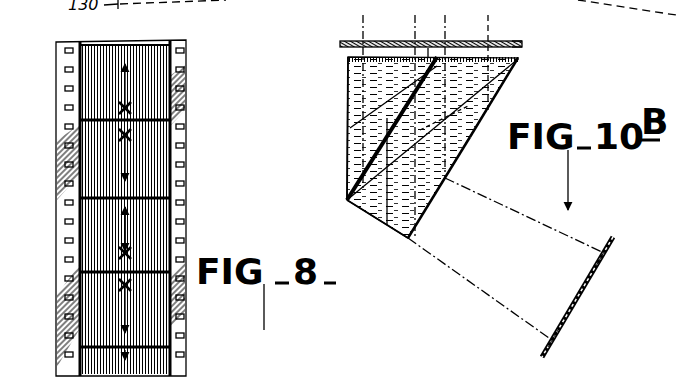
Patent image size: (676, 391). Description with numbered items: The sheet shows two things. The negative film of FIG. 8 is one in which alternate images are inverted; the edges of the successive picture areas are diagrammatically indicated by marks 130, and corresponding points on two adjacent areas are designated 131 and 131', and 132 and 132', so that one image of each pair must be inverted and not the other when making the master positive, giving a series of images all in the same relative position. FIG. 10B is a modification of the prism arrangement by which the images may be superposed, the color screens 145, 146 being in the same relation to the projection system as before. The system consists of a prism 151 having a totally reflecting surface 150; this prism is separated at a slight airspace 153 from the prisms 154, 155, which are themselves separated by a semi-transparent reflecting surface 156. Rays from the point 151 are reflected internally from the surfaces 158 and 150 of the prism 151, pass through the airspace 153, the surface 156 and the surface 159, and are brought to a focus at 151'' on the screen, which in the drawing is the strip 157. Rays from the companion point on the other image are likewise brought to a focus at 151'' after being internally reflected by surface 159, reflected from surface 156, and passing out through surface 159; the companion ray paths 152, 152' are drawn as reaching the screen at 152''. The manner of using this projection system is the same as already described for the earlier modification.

In FIG. 8, the marks 130 is at (79, 126).
In FIG. 8, the corresponding point 131 is at (177, 82).
In FIG. 8, the corresponding point 132 is at (179, 142).
In FIG. 8, the corresponding point 132' is at (178, 132).
In FIG. 8, the corresponding point 131' is at (177, 269).
In FIG. 10B, the color screen 145 is at (343, 43).
In FIG. 10B, the color screen 146 is at (522, 45).
In FIG. 10B, the totally reflecting surface 150 is at (348, 105).
In FIG. 10B, the prism 151 is at (395, 95).
In FIG. 10B, the light ray path 152 is at (396, 118).
In FIG. 10B, the light ray path 152' is at (510, 55).
In FIG. 10B, the surface 158 is at (428, 48).
In FIG. 10B, the prism 155 is at (507, 79).
In FIG. 10B, the surface 159 is at (464, 148).
In FIG. 10B, the airspace 153 is at (347, 201).
In FIG. 10B, the prism 154 is at (376, 217).
In FIG. 10B, the semi-transparent reflecting surface 156 is at (387, 225).
In FIG. 10B, the receiving strip / image plane 157 is at (609, 243).
In FIG. 10B, the projected ray on image plane 152'' is at (620, 262).
In FIG. 10B, the focus point on screen 151'' is at (576, 341).